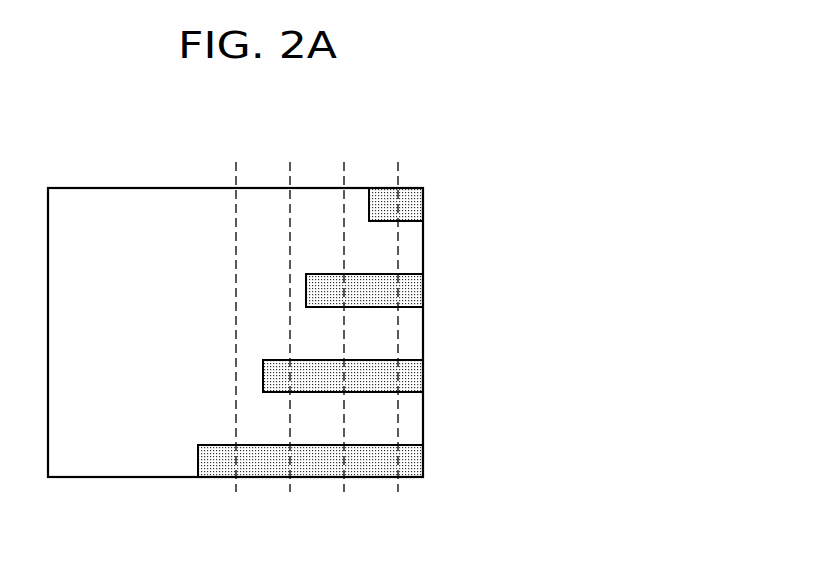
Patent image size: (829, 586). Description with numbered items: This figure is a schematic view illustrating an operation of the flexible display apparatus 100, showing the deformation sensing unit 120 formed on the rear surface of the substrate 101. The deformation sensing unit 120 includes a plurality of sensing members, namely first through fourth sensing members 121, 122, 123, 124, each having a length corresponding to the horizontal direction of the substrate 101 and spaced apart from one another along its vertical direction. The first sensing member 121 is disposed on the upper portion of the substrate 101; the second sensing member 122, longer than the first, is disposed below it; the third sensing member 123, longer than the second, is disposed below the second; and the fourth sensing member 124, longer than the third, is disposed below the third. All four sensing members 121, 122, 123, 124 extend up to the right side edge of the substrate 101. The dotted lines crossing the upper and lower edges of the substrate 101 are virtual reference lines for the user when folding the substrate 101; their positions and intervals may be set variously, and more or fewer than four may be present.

The flexible display apparatus 100 is at (520, 170).
The substrate 101 is at (105, 478).
The deformation sensing unit 120 is at (374, 332).
The first sensing member 121 is at (417, 204).
The second sensing member 122 is at (417, 293).
The third sensing member 123 is at (417, 378).
The fourth sensing member 124 is at (345, 461).